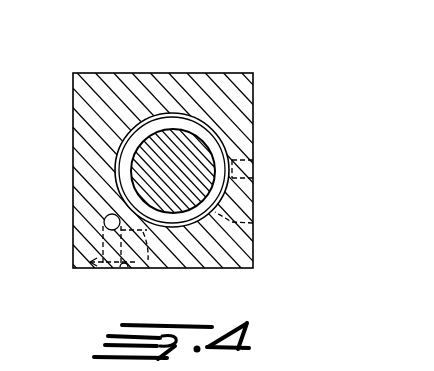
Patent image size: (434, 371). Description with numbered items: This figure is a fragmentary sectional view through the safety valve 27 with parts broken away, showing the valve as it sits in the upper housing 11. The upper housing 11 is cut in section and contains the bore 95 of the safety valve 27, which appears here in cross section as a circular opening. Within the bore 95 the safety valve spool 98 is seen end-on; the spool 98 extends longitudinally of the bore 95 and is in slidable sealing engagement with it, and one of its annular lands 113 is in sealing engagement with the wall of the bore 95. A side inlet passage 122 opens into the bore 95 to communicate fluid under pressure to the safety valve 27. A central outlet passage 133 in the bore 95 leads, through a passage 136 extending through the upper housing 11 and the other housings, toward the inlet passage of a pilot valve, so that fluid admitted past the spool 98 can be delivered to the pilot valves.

The upper housing 11 is at (203, 90).
The safety valve 27 is at (120, 143).
The bore 95 is at (224, 197).
The safety valve spool 98 is at (200, 158).
The side inlet passage 122 is at (253, 162).
The annular land 113 is at (253, 223).
The passage 136 is at (103, 247).
The central outlet passage 133 is at (153, 268).